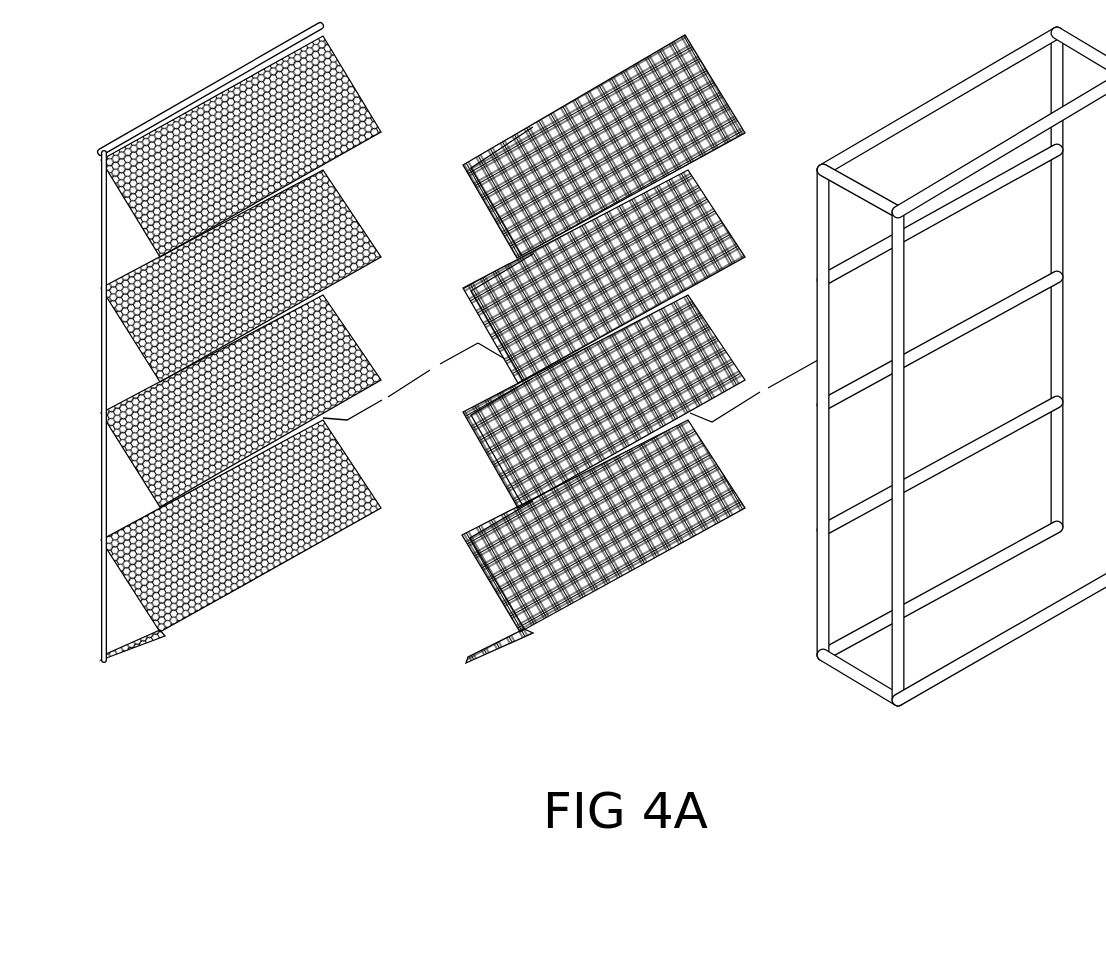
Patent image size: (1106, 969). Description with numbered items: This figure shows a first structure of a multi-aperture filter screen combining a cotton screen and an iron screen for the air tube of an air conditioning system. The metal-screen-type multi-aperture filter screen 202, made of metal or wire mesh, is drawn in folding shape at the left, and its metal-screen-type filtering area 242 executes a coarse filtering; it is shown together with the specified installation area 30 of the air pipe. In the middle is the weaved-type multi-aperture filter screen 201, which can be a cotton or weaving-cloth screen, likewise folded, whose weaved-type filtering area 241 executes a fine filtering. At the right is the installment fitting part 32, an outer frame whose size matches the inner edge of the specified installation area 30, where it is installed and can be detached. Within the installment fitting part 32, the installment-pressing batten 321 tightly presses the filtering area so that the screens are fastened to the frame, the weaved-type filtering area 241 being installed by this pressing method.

The specified installation area 30 is at (212, 396).
The metal-screen-type multi-aperture filter screen 202 is at (241, 401).
The metal-screen-type filtering area 242 is at (145, 655).
The weaved-type multi-aperture filter screen 201 is at (603, 383).
The weaved-type filtering area 241 is at (552, 630).
The installment fitting part 32 is at (942, 403).
The installment-pressing batten 321 is at (842, 525).